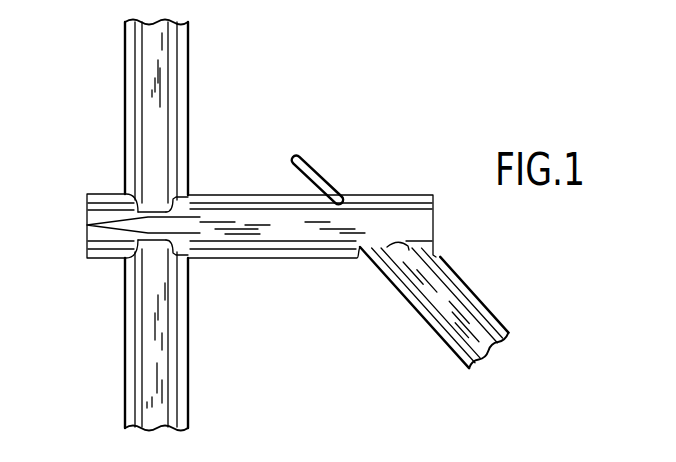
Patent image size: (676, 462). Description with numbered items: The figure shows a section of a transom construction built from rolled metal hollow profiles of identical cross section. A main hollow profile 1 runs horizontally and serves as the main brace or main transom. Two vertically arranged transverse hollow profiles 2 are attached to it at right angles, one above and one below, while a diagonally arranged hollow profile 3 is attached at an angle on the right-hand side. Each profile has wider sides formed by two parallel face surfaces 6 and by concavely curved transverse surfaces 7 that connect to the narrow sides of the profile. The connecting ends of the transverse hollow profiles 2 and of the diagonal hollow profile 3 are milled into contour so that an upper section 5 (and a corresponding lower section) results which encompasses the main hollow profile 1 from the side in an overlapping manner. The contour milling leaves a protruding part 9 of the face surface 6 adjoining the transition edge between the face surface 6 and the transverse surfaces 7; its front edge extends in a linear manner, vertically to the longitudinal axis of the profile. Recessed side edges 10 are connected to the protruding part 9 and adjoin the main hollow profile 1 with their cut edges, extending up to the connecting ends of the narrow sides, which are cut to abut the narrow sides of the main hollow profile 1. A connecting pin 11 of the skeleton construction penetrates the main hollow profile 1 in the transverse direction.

The main hollow profile 1 is at (300, 259).
The transverse hollow profiles 2 is at (190, 61).
The diagonally arranged hollow profile 3 is at (428, 342).
The upper section 5 is at (153, 202).
The face surface 6 is at (152, 33).
The transverse surface 7 is at (132, 80).
The protruding part 9 is at (87, 225).
The recessed side edges 10 is at (183, 202).
The connecting pin 11 is at (304, 156).